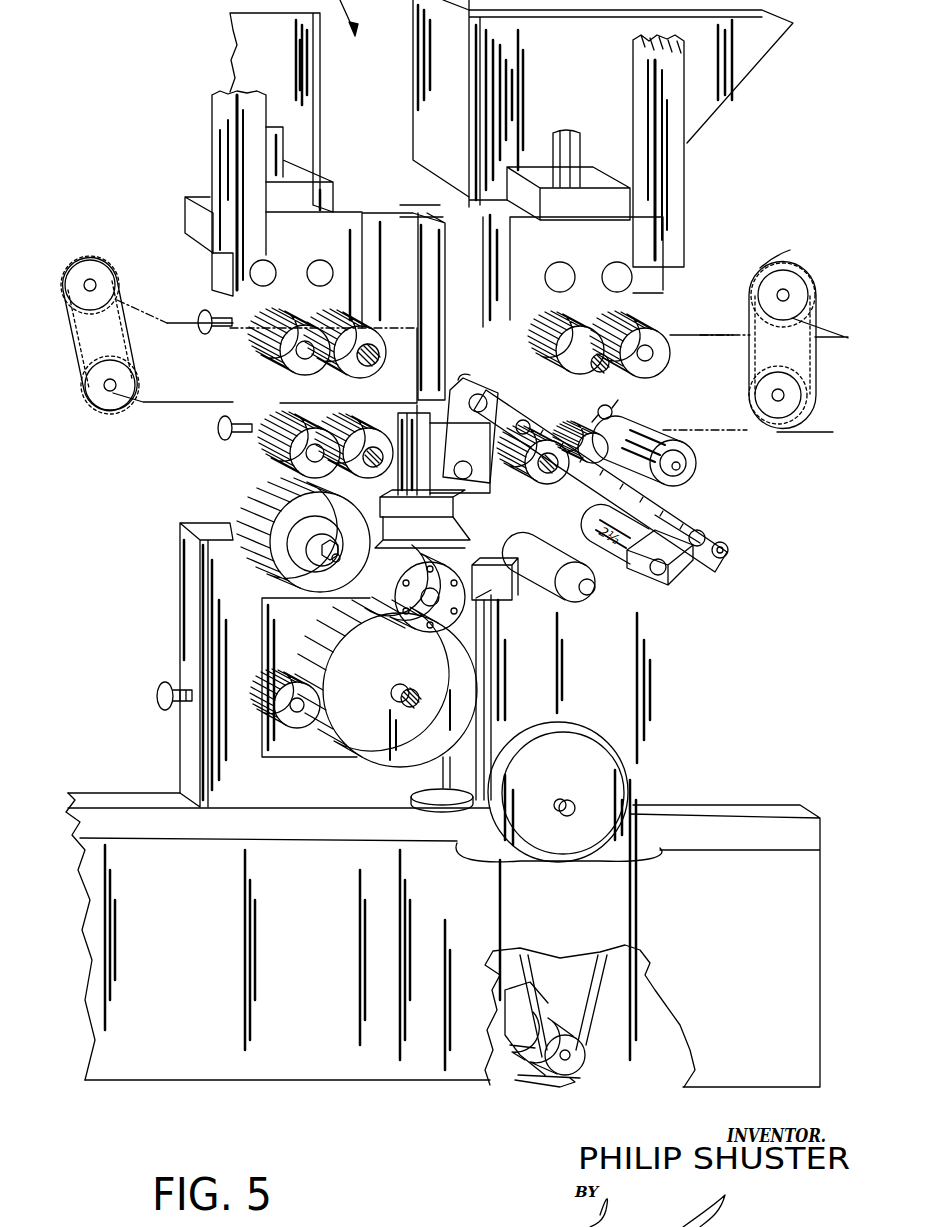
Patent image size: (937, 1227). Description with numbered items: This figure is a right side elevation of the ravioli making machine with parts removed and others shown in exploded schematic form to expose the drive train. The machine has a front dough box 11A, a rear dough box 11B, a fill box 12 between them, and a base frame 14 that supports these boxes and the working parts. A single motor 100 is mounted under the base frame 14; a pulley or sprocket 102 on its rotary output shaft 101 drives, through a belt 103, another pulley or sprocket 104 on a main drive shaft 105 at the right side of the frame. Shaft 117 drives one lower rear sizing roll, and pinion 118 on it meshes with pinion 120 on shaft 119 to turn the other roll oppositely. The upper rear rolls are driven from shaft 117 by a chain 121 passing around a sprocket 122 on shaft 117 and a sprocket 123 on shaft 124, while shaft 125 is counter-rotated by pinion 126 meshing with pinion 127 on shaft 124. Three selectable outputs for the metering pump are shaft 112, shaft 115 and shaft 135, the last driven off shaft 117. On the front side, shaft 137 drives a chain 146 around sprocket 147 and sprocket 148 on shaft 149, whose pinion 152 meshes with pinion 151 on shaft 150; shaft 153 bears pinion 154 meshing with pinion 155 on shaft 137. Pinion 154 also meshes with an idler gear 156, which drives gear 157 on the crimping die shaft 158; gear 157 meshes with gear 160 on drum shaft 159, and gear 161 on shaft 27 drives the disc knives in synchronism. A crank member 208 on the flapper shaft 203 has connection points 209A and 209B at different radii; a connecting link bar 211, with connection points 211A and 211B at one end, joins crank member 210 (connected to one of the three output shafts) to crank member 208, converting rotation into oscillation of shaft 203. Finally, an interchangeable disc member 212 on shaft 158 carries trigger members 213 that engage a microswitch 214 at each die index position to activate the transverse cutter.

The front dough box 11A is at (285, 64).
The rear dough box 11B is at (590, 66).
The fill box 12 is at (397, 306).
The base frame 14 is at (228, 657).
The shaft 27 is at (300, 712).
The motor 100 is at (553, 1030).
The rotary output shaft 101 is at (570, 1058).
The pulley or sprocket 102 is at (575, 1070).
The belt 103 is at (600, 1000).
The pulley or sprocket 104 is at (558, 776).
The main drive shaft 105 is at (572, 802).
The shaft 112 is at (588, 596).
The shaft 115 is at (660, 580).
The shaft 117 is at (552, 472).
The pinion 118 is at (540, 480).
The shaft 119 is at (596, 405).
The pinion 120 is at (578, 428).
The chain 121 is at (830, 356).
The sprocket 122 is at (785, 398).
The sprocket 123 is at (785, 248).
The shaft 124 is at (790, 285).
The shaft 125 is at (653, 353).
The pinion 126 is at (630, 290).
The pinion 127 is at (555, 322).
The shaft 135 is at (690, 465).
The shaft 137 is at (369, 449).
The chain 146 is at (63, 342).
The sprocket 147 is at (115, 395).
The sprocket 148 is at (78, 262).
The shaft 149 is at (323, 350).
The shaft 150 is at (302, 357).
The pinion 151 is at (283, 292).
The pinion 152 is at (362, 326).
The shaft 153 is at (313, 445).
The pinion 154 is at (255, 455).
The pinion 155 is at (370, 428).
The idler gear 156 is at (268, 495).
The gear 157 is at (422, 503).
The shaft 158 is at (455, 610).
The shaft 159 is at (413, 689).
The gear 160 is at (392, 666).
The gear 161 is at (279, 655).
The flapper shaft 203 is at (470, 473).
The crank member 208 is at (473, 419).
The connection point 209A is at (492, 395).
The connection point 209B is at (468, 380).
The crank member 210 is at (678, 541).
The connecting link bar 211 is at (634, 501).
The connection point 211A is at (700, 528).
The connection point 211B is at (728, 546).
The disc member 212 is at (465, 612).
The trigger members 213 is at (420, 637).
The microswitch 214 is at (422, 532).